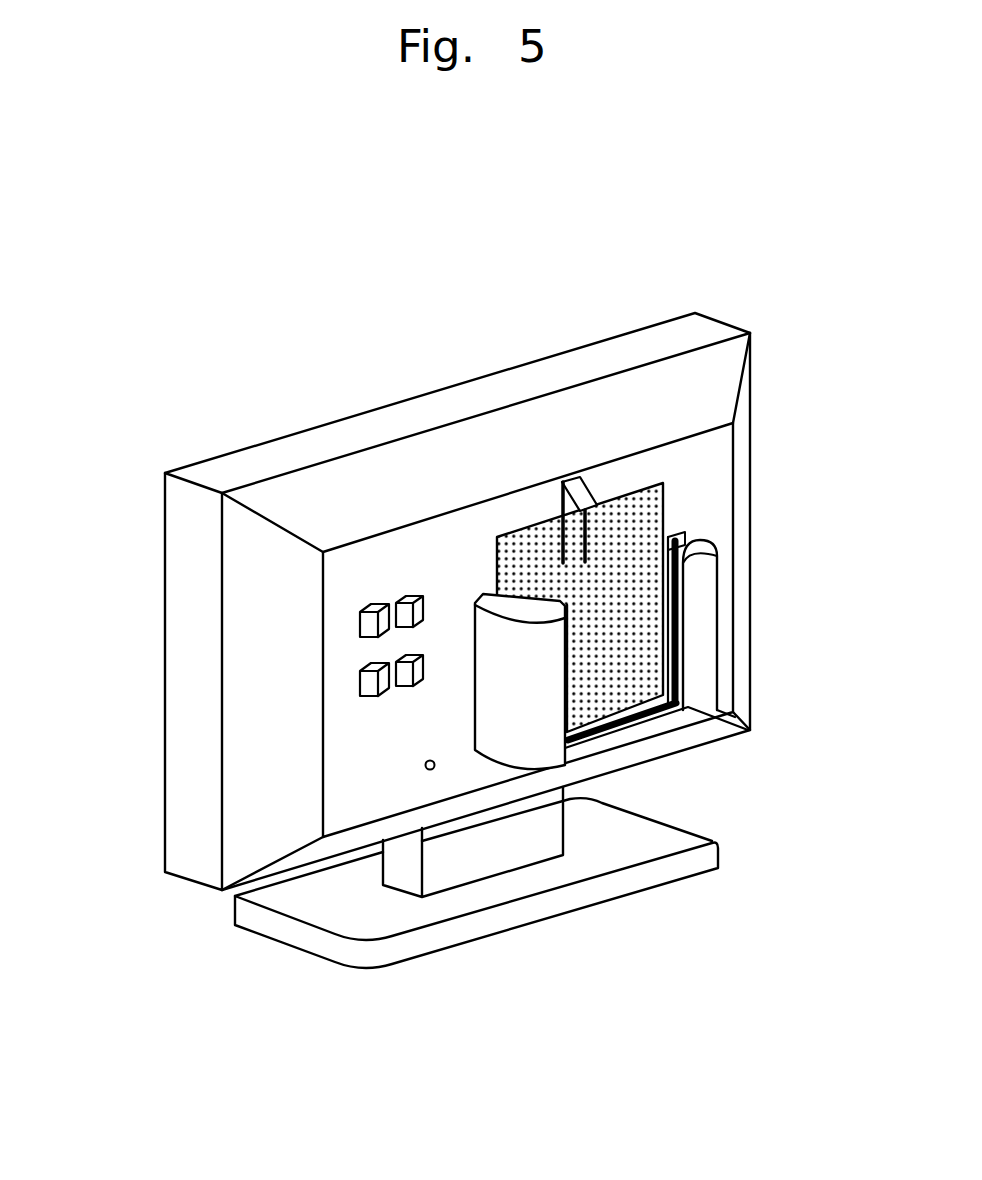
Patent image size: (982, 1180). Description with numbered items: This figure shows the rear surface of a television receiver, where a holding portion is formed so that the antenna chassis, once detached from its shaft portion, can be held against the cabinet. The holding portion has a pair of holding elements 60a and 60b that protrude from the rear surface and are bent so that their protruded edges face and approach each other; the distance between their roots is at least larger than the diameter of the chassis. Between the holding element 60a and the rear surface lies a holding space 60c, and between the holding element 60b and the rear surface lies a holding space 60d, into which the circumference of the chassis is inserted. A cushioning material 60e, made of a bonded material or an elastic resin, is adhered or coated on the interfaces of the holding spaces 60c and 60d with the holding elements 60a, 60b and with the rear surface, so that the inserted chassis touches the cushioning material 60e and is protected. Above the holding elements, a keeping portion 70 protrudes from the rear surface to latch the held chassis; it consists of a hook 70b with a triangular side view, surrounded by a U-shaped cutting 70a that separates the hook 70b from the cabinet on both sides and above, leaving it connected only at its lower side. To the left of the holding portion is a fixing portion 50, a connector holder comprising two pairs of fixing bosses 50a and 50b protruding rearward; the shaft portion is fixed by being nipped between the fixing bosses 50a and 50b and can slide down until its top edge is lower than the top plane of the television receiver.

The fixing portion 50 is at (254, 604).
The fixing boss 50a is at (363, 623).
The fixing boss 50b is at (363, 690).
The holding element 60a is at (522, 702).
The holding element 60b is at (710, 626).
The holding space 60c is at (533, 595).
The holding space 60d is at (676, 537).
The cushioning material 60e is at (497, 537).
The keeping portion 70 is at (600, 486).
The U-shaped cutting 70a is at (563, 481).
The hook 70b is at (573, 477).